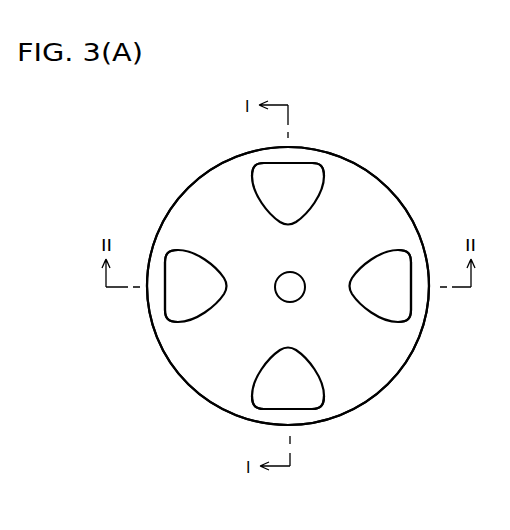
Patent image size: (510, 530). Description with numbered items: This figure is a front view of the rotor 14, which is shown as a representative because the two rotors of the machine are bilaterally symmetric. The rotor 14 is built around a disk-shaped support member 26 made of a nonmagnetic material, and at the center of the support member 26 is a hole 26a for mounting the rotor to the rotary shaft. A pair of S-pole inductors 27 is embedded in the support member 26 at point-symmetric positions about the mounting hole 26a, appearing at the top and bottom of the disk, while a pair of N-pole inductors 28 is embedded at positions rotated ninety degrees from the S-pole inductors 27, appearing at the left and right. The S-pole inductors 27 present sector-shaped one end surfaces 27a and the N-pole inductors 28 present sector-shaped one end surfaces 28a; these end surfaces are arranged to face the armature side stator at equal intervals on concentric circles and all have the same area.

The rotor 14 is at (154, 176).
The support member 26 is at (188, 185).
The hole 26a is at (285, 288).
The S-pole inductor 27 is at (322, 168).
The one end surface 27a is at (257, 174).
The N-pole inductor 28 is at (175, 315).
The one end surface 28a is at (173, 265).